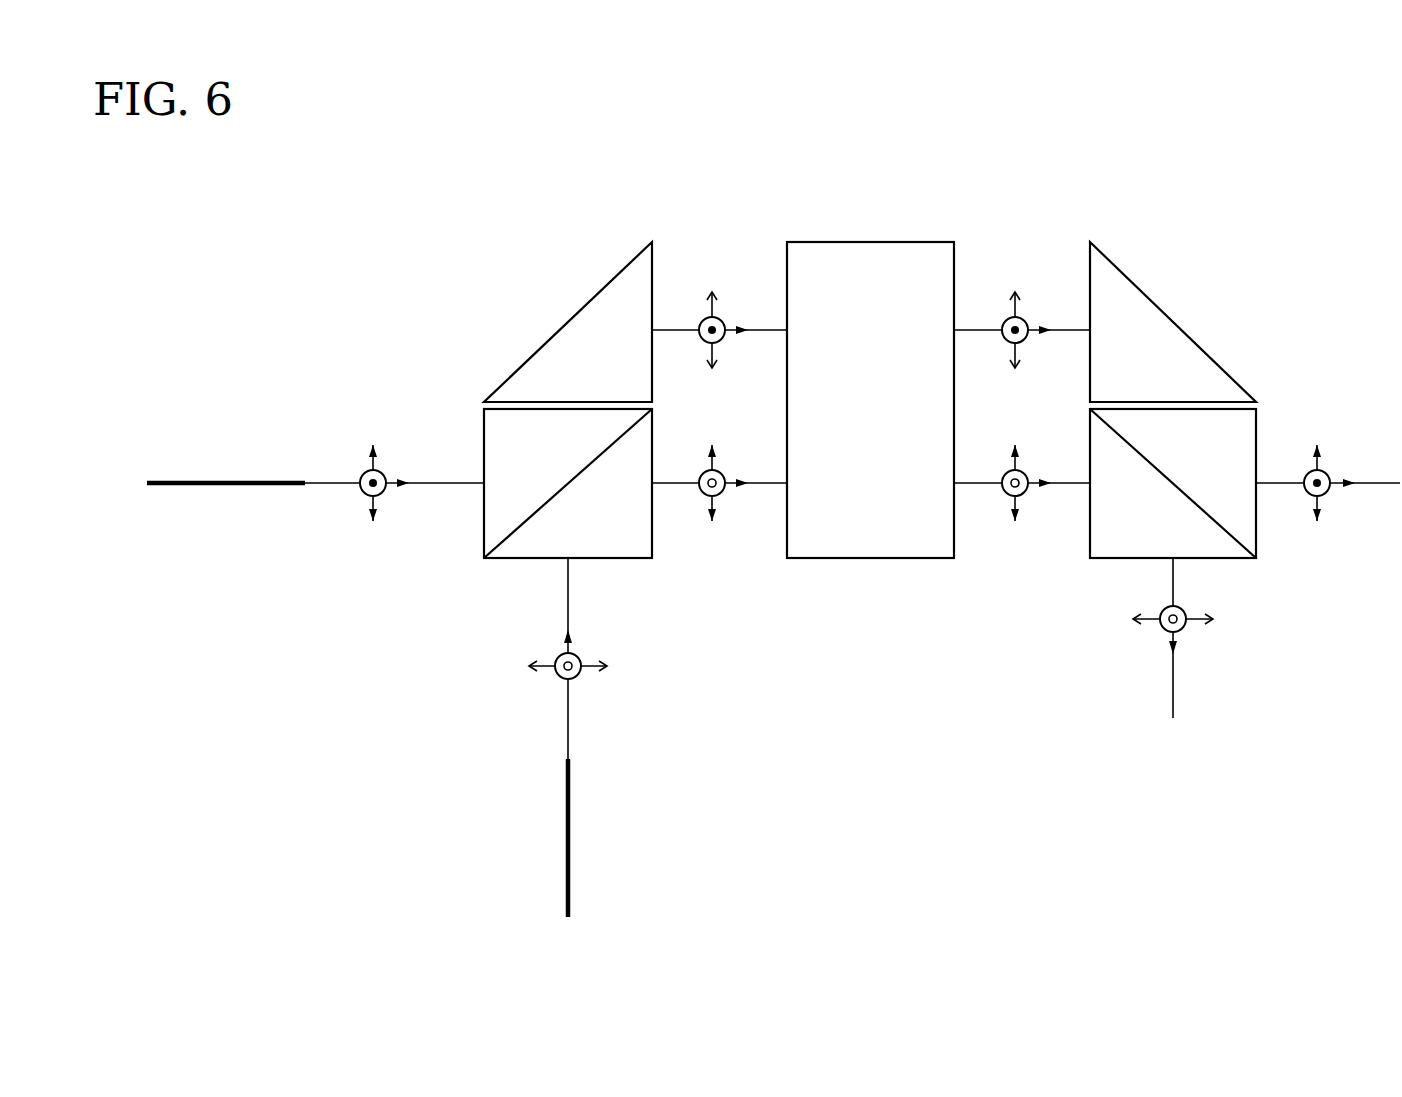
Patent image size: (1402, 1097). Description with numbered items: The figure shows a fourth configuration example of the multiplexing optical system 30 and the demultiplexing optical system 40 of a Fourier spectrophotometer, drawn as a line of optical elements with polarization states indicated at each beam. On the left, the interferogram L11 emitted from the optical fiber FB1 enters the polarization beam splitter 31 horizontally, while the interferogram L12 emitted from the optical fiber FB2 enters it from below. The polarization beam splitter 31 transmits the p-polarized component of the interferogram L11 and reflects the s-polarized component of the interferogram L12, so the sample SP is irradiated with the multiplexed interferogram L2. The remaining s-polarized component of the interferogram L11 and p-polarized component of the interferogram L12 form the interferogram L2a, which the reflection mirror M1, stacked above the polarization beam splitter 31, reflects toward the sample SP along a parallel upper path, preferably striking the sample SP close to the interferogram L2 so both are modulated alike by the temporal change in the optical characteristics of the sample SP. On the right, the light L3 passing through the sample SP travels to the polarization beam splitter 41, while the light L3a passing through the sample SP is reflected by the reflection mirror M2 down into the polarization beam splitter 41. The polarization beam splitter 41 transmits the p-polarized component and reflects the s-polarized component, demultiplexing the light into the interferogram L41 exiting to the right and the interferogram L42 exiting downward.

The multiplexing optical system 30 is at (533, 359).
The demultiplexing optical system 40 is at (1211, 360).
The polarization beam splitter 31 is at (484, 545).
The polarization beam splitter 41 is at (1257, 537).
The reflection mirror M1 is at (550, 339).
The reflection mirror M2 is at (1190, 338).
The sample SP is at (895, 241).
The optical fiber FB1 is at (200, 480).
The optical fiber FB2 is at (572, 828).
The interferogram L11 is at (390, 475).
The interferogram L12 is at (565, 650).
The interferogram L2 is at (728, 475).
The interferogram L2a is at (720, 318).
The light passing through the sample L3 is at (1030, 475).
The light passing through the sample L3a is at (1028, 318).
The interferogram L41 is at (1333, 475).
The interferogram L42 is at (1168, 635).